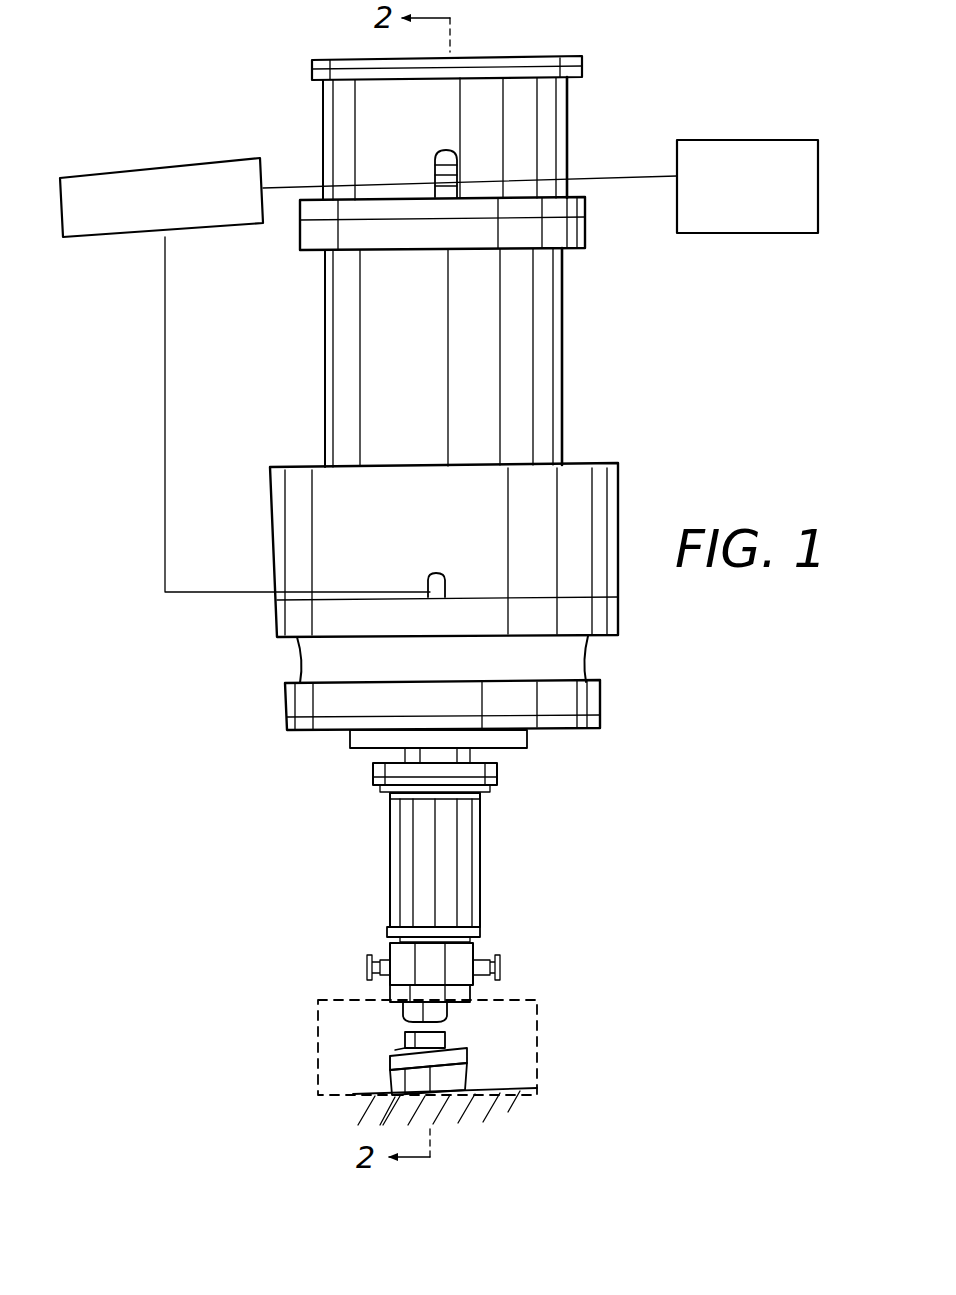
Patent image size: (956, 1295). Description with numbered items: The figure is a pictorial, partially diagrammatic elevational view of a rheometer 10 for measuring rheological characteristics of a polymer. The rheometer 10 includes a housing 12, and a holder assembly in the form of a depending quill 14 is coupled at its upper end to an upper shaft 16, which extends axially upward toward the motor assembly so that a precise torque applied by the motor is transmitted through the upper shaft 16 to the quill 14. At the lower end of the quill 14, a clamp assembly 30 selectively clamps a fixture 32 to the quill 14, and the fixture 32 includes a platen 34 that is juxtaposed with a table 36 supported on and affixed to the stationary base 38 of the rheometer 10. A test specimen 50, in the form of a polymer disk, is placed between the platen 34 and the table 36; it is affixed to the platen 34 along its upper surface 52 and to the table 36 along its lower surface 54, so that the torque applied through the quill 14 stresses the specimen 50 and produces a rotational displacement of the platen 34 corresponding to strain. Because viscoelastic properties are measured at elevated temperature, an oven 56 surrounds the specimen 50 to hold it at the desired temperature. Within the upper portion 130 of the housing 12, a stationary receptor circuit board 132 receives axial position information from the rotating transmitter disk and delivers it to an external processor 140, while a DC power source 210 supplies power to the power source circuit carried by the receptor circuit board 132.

The rheometer 10 is at (266, 466).
The housing 12 is at (347, 373).
The quill 14 is at (389, 870).
The upper shaft 16 is at (410, 756).
The clamp assembly 30 is at (488, 938).
The fixture 32 is at (455, 1010).
The platen 34 is at (470, 1045).
The table 36 is at (465, 1078).
The stationary base 38 is at (507, 1090).
The specimen 50 is at (390, 1077).
The upper surface 52 is at (395, 1050).
The lower surface 54 is at (395, 1097).
The oven 56 is at (320, 1005).
The upper portion 130 is at (545, 118).
The receptor circuit board 132 is at (447, 150).
The external processor 140 is at (183, 128).
The DC power source 210 is at (776, 140).